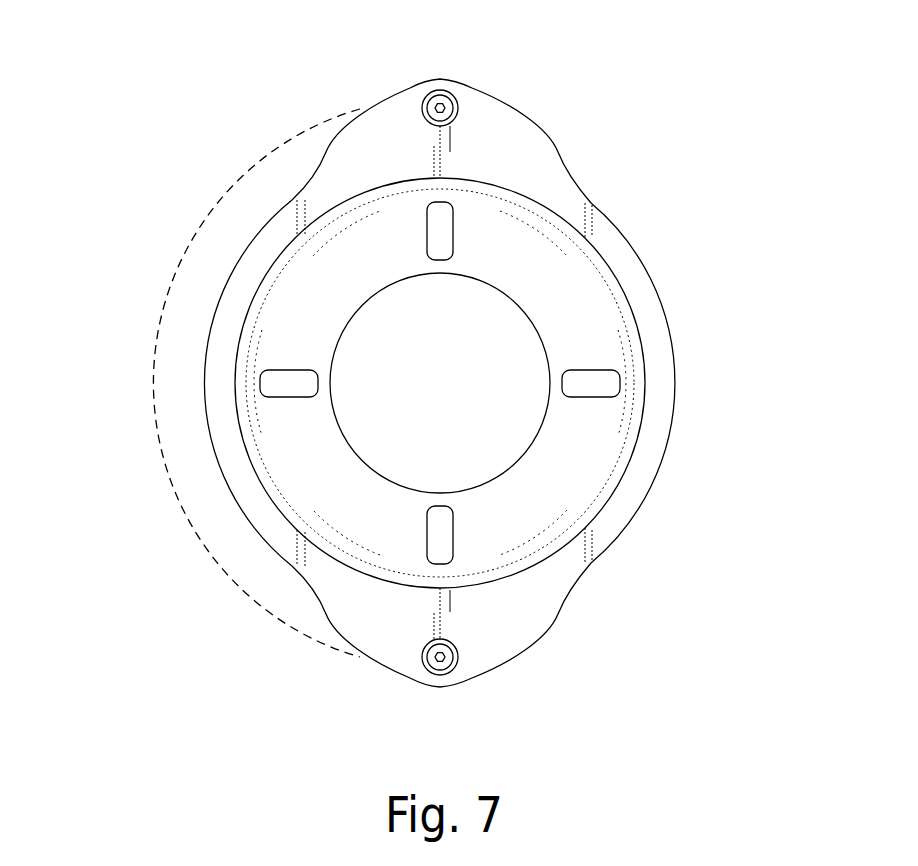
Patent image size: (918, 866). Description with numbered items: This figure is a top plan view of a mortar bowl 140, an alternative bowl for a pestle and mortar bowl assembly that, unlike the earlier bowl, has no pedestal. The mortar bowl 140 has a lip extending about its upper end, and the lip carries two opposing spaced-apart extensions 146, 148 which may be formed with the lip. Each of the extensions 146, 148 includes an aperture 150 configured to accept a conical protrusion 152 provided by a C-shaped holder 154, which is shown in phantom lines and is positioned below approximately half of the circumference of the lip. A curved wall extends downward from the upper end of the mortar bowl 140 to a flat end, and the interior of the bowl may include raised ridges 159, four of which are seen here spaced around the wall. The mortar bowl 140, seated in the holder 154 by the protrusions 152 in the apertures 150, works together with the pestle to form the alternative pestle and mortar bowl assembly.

The mortar bowl 140 is at (600, 291).
The extension 146 is at (523, 133).
The extension 148 is at (520, 613).
The aperture 150 is at (423, 112).
The conical protrusion 152 is at (447, 107).
The C-shaped holder 154 is at (240, 174).
The raised ridges 159 is at (447, 232).